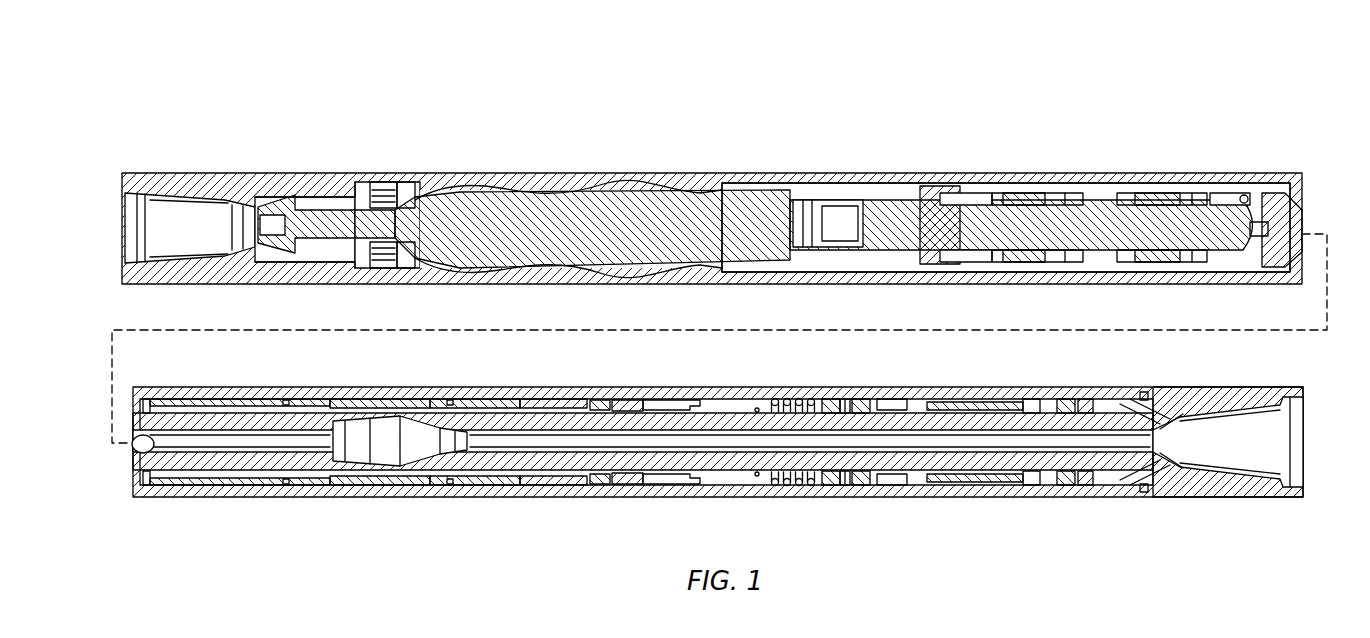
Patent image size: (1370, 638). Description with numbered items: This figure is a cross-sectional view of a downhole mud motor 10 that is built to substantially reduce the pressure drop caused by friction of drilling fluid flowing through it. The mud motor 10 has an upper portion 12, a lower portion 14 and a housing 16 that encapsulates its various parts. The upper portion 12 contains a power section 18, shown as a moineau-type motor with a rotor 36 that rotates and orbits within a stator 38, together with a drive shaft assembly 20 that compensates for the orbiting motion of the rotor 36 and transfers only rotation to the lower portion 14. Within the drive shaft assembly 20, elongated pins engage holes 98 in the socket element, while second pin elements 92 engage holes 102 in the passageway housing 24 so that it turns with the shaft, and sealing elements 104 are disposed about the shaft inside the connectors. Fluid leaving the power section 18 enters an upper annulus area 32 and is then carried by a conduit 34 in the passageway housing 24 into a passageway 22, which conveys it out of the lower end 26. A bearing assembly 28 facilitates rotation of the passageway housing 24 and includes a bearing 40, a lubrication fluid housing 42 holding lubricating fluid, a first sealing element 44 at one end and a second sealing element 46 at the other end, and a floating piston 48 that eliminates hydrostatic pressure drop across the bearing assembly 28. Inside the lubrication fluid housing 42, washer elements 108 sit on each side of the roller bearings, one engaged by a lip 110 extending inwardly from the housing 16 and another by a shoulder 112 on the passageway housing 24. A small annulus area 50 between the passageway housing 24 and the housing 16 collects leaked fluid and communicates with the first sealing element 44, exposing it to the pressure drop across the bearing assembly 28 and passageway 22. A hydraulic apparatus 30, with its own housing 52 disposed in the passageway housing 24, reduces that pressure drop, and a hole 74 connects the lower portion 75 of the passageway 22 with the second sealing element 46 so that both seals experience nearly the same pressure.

The mud motor 10 is at (737, 304).
The upper portion 12 is at (254, 119).
The lower portion 14 is at (741, 372).
The housing 16 is at (842, 175).
The power section 18 is at (390, 131).
The drive shaft assembly 20 is at (867, 133).
The passageway 22 is at (275, 467).
The passageway housing 24 is at (230, 487).
The lower end 26 is at (1222, 497).
The bearing assembly 28 is at (1082, 383).
The hydraulic apparatus 30 is at (488, 382).
The upper annulus area 32 is at (868, 190).
The conduit 34 is at (135, 430).
The rotor 36 is at (553, 210).
The stator 38 is at (580, 188).
The bearing 40 is at (205, 398).
The lubrication fluid housing 42 is at (760, 489).
The first sealing element 44 is at (612, 404).
The second sealing element 46 is at (1080, 398).
The floating piston 48 is at (645, 405).
The small annulus area 50 is at (345, 404).
The housing 52 is at (440, 408).
The hole 74 is at (1140, 400).
The lower portion of the passageway 75 is at (1192, 472).
The second pin elements 92 is at (1213, 185).
The holes 98 is at (950, 190).
The holes 102 is at (1265, 193).
The sealing element 104 is at (1035, 195).
The washer element 108 is at (868, 489).
The lip 110 is at (850, 402).
The shoulder 112 is at (870, 400).